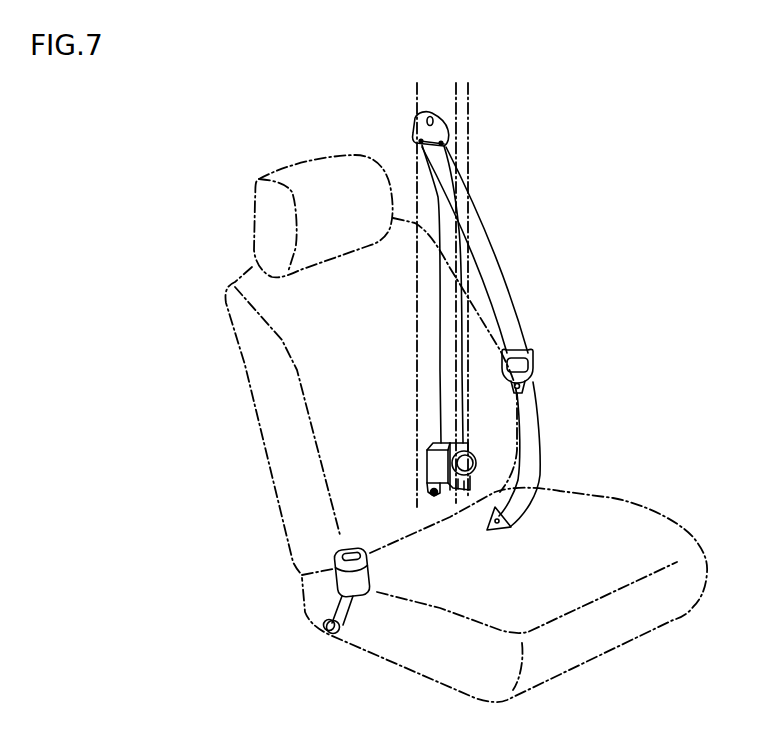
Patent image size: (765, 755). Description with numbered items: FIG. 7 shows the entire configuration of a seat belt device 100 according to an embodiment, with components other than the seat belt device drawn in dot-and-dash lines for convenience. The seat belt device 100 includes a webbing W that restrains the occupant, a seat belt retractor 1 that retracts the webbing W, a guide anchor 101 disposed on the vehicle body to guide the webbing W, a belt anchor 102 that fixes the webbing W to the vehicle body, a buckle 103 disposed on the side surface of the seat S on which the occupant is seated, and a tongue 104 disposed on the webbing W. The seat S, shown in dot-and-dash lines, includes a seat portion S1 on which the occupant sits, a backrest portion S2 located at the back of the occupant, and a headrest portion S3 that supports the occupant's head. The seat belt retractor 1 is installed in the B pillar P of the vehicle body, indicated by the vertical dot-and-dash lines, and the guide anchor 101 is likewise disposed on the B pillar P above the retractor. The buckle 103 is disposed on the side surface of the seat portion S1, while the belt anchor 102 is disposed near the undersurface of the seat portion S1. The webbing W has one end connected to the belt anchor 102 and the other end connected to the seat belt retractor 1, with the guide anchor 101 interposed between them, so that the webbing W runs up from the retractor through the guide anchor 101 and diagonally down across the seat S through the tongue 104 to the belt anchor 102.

The seat belt retractor 1 is at (435, 462).
The seat belt device 100 is at (528, 336).
The guide anchor 101 is at (412, 121).
The belt anchor 102 is at (497, 532).
The buckle 103 is at (335, 563).
The tongue 104 is at (537, 368).
The webbing W is at (490, 255).
The B pillar P is at (470, 103).
The seat S is at (422, 428).
The seat portion S1 is at (640, 549).
The backrest portion S2 is at (352, 331).
The headrest portion S3 is at (352, 216).